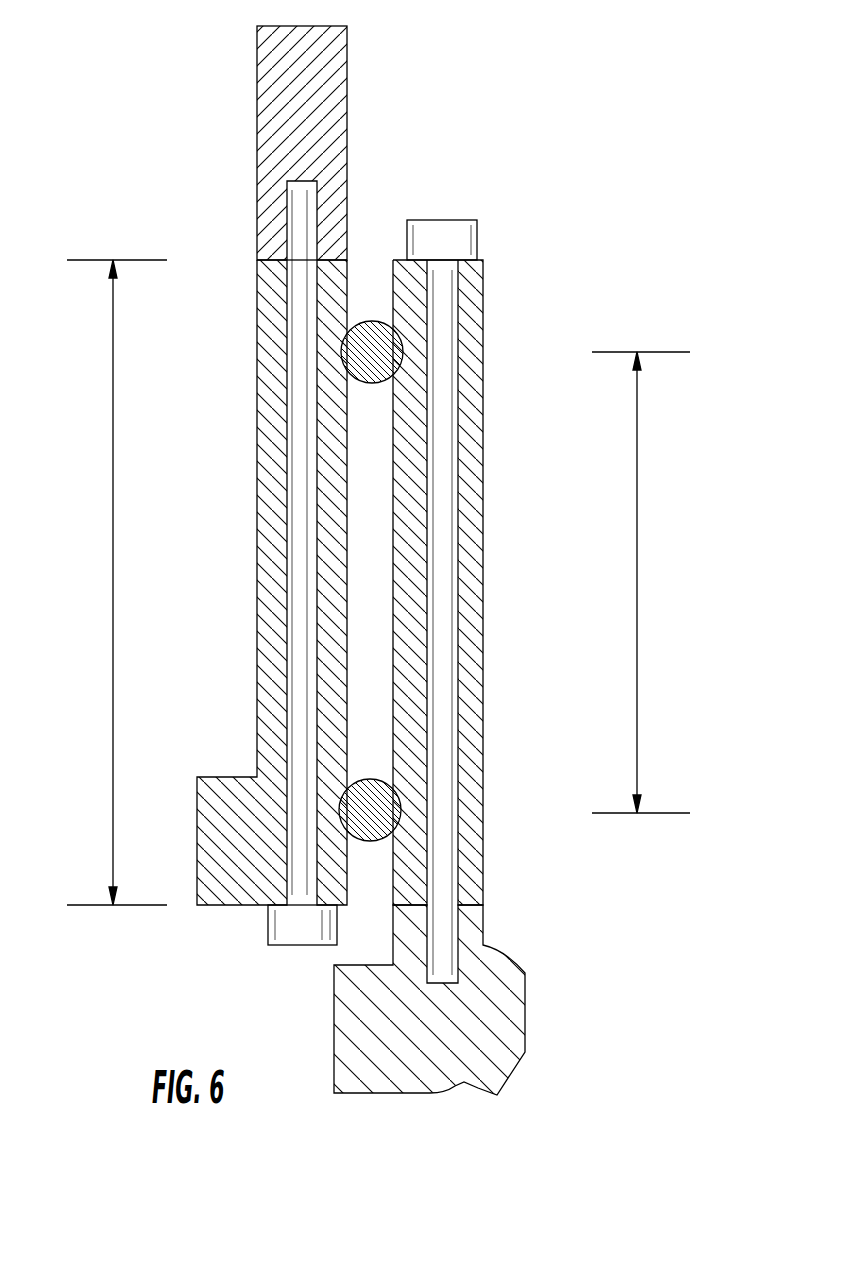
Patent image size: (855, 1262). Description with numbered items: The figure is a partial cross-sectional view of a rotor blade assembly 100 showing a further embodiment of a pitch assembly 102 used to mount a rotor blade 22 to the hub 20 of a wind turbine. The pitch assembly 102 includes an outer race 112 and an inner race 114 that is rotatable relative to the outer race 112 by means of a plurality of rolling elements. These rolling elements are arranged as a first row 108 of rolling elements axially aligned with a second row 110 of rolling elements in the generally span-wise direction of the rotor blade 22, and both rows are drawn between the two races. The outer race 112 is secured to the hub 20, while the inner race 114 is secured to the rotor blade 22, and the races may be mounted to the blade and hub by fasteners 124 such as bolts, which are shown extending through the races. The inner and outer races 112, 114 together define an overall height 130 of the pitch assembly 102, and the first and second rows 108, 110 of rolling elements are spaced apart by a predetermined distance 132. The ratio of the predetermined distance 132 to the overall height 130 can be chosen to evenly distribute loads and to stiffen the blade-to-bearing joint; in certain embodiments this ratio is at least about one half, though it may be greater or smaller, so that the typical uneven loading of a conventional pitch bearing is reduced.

The hub 20 is at (526, 1007).
The rotor blade 22 is at (258, 143).
The rotor blade assembly 100 is at (662, 170).
The pitch assembly 102 is at (513, 320).
The first row of rolling elements 108 is at (372, 321).
The second row of rolling elements 110 is at (372, 842).
The outer race 112 is at (484, 457).
The inner race 114 is at (257, 440).
The fasteners 124 is at (300, 528).
The overall height 130 is at (112, 592).
The predetermined distance 132 is at (638, 595).